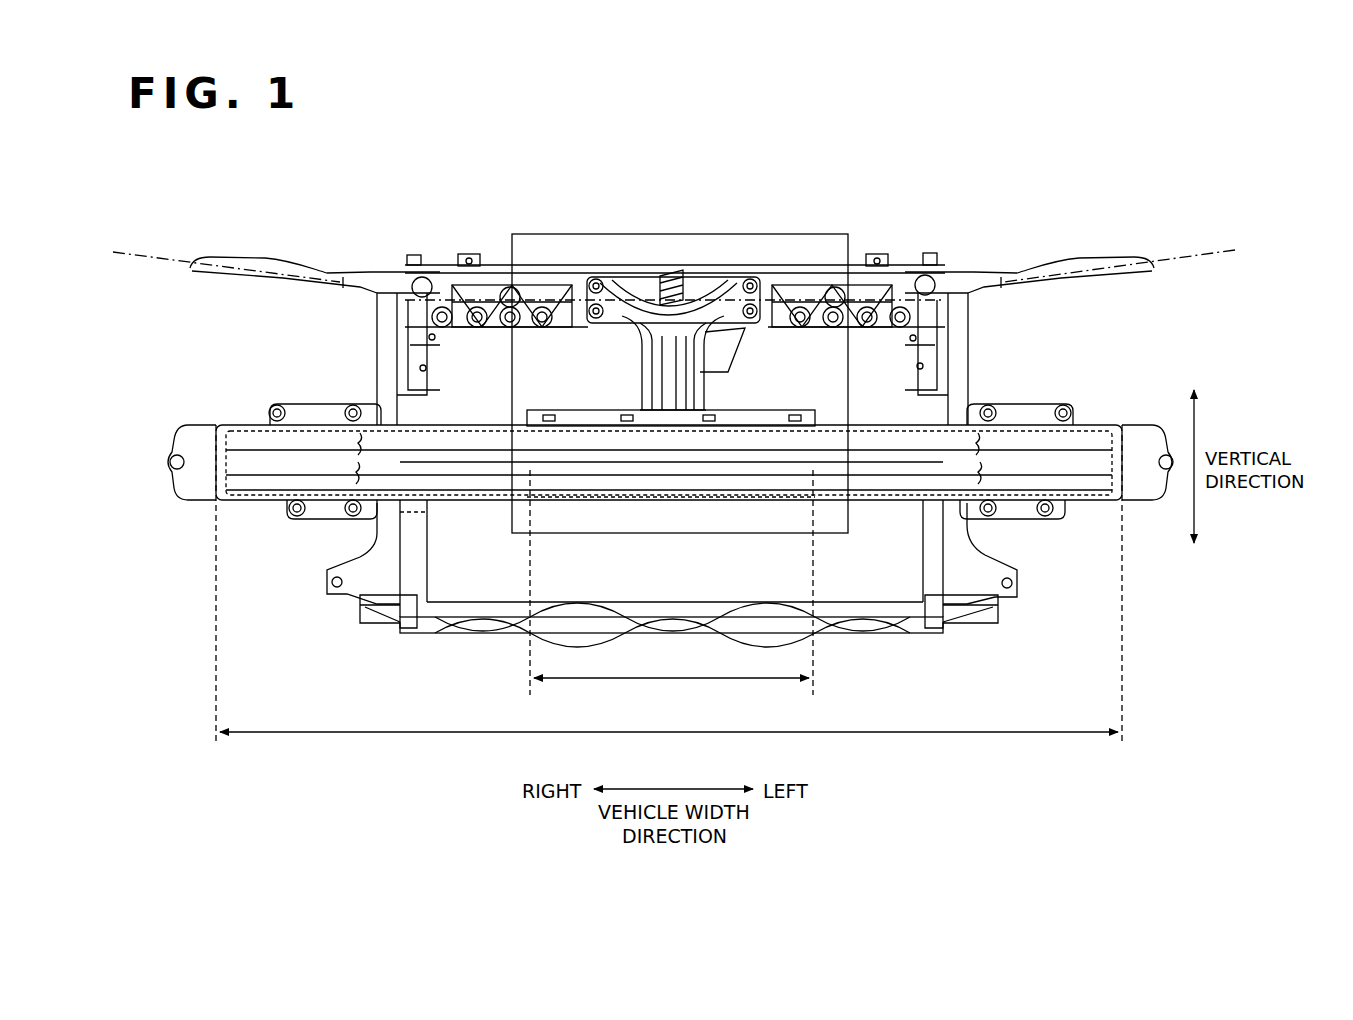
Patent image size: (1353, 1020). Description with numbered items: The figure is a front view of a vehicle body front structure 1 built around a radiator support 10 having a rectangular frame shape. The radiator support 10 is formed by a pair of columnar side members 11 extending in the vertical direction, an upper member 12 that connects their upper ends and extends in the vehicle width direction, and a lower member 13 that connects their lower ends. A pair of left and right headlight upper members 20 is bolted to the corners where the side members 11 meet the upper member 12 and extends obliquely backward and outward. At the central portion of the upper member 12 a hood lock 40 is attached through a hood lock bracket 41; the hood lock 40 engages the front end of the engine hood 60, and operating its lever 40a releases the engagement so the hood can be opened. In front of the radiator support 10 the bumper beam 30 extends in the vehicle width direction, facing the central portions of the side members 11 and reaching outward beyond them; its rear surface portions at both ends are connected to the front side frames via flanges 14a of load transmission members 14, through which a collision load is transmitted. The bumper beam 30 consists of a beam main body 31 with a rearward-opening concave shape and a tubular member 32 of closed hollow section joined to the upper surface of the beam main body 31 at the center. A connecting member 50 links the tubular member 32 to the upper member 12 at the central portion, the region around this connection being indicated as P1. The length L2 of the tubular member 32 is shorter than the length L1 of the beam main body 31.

The vehicle body front structure 1 is at (716, 158).
The radiator support 10 is at (433, 640).
The side members 11 is at (385, 368).
The upper member 12 is at (735, 275).
The lower member 13 is at (668, 616).
The load transmission members 14 is at (238, 425).
The flanges 14a is at (185, 502).
The headlight upper members 20 is at (216, 258).
The bumper beam 30 is at (606, 472).
The beam main body 31 is at (781, 483).
The tubular member 32 is at (795, 412).
The hood lock 40 is at (671, 290).
The lever 40a is at (643, 290).
The hood lock bracket 41 is at (735, 338).
The connecting member 50 is at (634, 378).
The engine hood 60 is at (157, 262).
The region P1 is at (547, 235).
The length L1 is at (669, 585).
The length L2 is at (671, 582).